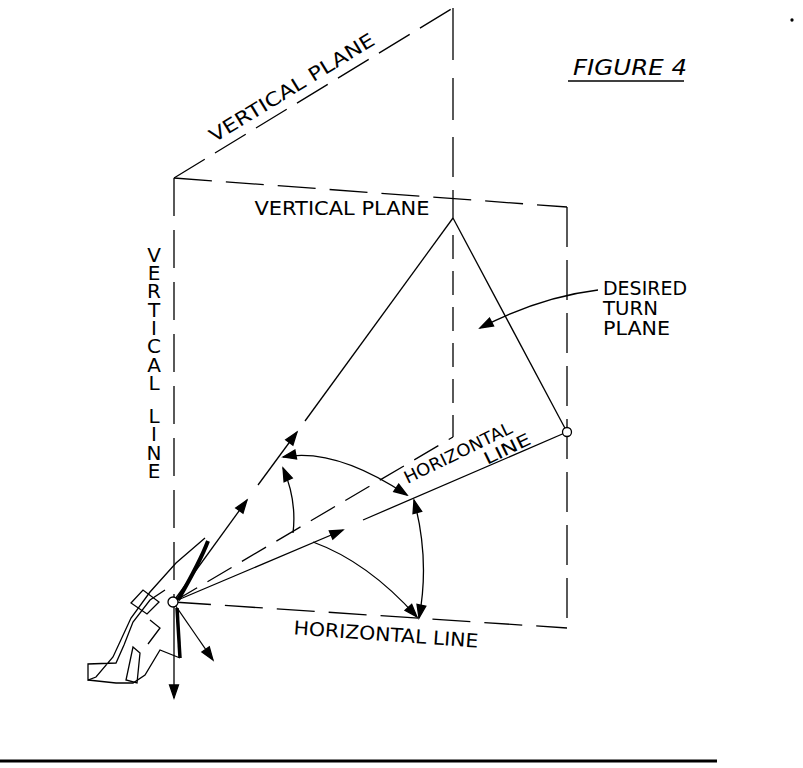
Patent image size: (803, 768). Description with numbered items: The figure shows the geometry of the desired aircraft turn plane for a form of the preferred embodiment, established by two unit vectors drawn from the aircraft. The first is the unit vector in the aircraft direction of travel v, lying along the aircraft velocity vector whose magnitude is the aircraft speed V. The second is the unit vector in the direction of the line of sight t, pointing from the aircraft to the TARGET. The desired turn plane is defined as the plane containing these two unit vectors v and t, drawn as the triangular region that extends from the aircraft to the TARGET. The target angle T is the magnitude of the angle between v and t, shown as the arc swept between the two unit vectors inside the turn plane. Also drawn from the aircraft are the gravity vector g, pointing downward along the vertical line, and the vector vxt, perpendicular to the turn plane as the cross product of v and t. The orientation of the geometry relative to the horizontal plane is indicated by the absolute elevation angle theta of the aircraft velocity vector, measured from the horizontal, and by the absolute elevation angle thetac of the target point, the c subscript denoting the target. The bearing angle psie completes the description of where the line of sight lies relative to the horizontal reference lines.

The aircraft speed V is at (210, 539).
The unit vector in the aircraft direction of travel v is at (288, 406).
The unit vector in the direction of the line of sight from aircraft to target t is at (348, 503).
The gravity vector g is at (168, 706).
The cross product of velocity and target vectors (turn plane normal) vxt is at (212, 668).
The target angle T is at (345, 470).
The absolute elevation theta is at (280, 500).
The absolute elevation of the target point thetac is at (435, 559).
The target azimuth angle psie is at (365, 579).
The target TARGET is at (615, 429).